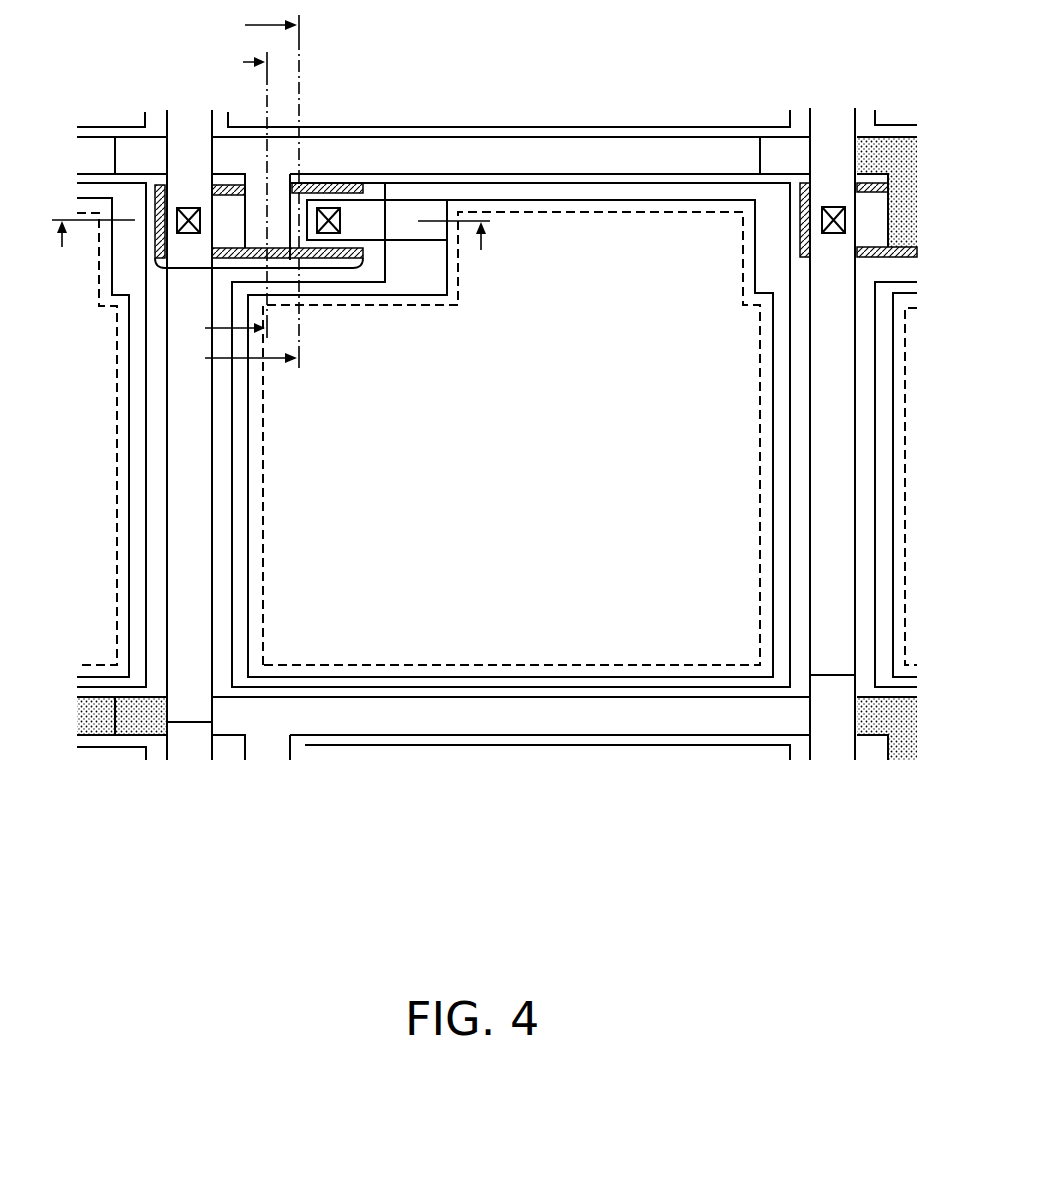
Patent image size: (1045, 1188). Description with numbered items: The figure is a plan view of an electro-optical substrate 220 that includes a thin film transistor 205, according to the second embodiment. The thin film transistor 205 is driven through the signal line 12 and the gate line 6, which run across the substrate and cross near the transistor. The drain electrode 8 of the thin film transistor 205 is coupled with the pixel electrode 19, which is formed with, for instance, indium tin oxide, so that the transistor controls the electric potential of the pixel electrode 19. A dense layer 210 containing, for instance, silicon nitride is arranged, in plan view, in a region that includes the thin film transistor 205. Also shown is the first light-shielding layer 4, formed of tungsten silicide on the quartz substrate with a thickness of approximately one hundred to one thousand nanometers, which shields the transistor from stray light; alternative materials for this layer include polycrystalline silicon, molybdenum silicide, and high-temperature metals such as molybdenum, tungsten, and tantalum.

The electro-optical substrate 220 is at (769, 63).
The gate line 6 is at (533, 153).
The signal line 12 is at (193, 486).
The dense layer 210 is at (368, 193).
The first light-shielding layer 4 is at (323, 183).
The thin film transistor 205 is at (203, 270).
The drain electrode 8 is at (405, 213).
The pixel electrode 19 is at (598, 240).